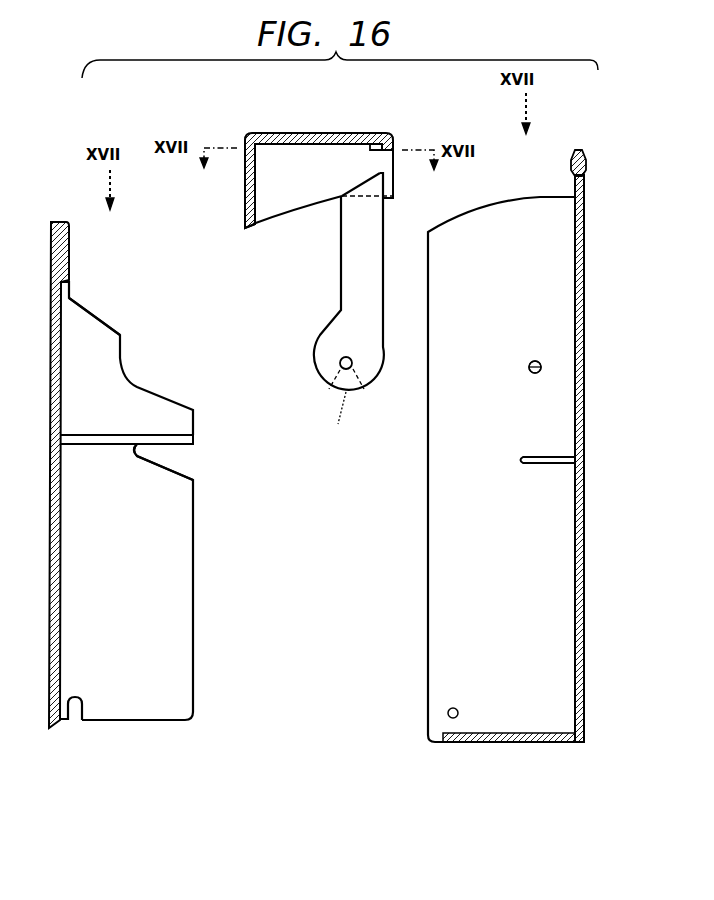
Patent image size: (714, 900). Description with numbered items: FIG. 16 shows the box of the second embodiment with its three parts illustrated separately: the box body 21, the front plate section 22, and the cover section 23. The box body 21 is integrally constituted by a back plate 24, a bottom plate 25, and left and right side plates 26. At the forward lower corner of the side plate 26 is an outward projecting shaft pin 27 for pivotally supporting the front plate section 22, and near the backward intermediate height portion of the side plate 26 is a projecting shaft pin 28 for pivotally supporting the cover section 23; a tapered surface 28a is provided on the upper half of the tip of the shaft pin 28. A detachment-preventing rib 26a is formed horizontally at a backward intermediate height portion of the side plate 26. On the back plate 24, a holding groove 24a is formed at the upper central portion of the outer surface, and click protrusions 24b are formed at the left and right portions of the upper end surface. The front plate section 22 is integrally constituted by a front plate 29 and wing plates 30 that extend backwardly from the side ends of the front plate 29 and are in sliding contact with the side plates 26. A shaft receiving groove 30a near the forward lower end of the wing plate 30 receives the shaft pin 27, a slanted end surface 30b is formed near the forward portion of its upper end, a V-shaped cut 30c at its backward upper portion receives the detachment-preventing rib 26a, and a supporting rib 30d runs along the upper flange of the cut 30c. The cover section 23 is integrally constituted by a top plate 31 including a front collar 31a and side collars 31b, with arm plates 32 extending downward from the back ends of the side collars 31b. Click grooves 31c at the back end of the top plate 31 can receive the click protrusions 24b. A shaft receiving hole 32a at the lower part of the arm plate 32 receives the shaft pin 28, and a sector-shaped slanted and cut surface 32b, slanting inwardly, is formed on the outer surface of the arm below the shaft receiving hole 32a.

The box body 21 is at (509, 440).
The front plate section 22 is at (178, 348).
The cover section 23 is at (301, 172).
The back plate 24 is at (580, 293).
The holding groove 24a is at (586, 164).
The click protrusion 24b is at (576, 150).
The bottom plate 25 is at (514, 743).
The side plate 26 is at (446, 569).
The detachment-preventing rib 26a is at (541, 465).
The shaft pin 27 is at (458, 711).
The shaft pin 28 is at (532, 375).
The tapered surface 28a is at (535, 362).
The front plate 29 is at (51, 381).
The wing plate 30 is at (183, 578).
The shaft receiving groove 30a is at (82, 709).
The slanted end surface 30b is at (98, 320).
The V-shaped cut 30c is at (186, 464).
The supporting rib 30d is at (102, 440).
The top plate 31 is at (297, 133).
The front collar 31a is at (246, 201).
The side collar 31b is at (292, 200).
The click groove 31c is at (388, 142).
The arm plate 32 is at (341, 281).
The shaft receiving hole 32a is at (343, 357).
The slanted and cut surface 32b is at (337, 418).